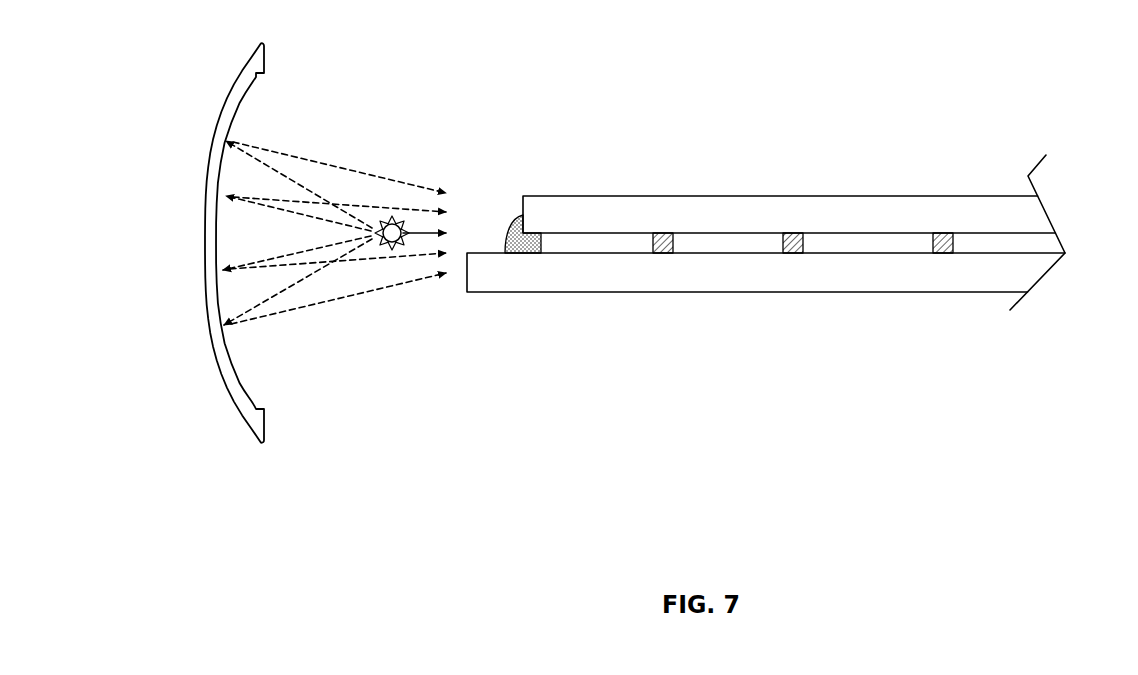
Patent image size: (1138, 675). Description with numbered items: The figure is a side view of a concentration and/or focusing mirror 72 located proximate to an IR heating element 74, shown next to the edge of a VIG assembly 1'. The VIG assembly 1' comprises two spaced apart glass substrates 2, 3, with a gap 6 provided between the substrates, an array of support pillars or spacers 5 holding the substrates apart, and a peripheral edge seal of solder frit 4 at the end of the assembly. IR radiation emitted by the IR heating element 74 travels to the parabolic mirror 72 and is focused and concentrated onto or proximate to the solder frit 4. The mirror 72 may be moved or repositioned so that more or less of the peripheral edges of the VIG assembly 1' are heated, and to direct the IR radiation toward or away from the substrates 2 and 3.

The VIG assembly 1' is at (765, 189).
The glass substrate 2 is at (756, 293).
The glass substrate 3 is at (786, 196).
The solder frit 4 is at (503, 249).
The support pillars or spacers 5 is at (652, 235).
The gap 6 is at (868, 242).
The concentration and/or focusing mirror 72 is at (209, 246).
The IR heating element 74 is at (393, 218).